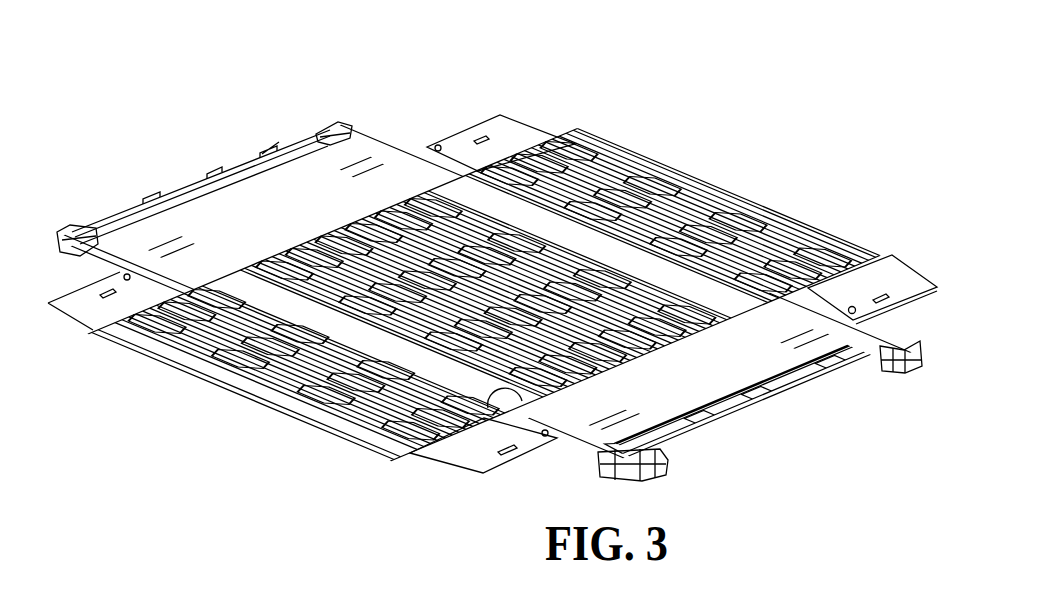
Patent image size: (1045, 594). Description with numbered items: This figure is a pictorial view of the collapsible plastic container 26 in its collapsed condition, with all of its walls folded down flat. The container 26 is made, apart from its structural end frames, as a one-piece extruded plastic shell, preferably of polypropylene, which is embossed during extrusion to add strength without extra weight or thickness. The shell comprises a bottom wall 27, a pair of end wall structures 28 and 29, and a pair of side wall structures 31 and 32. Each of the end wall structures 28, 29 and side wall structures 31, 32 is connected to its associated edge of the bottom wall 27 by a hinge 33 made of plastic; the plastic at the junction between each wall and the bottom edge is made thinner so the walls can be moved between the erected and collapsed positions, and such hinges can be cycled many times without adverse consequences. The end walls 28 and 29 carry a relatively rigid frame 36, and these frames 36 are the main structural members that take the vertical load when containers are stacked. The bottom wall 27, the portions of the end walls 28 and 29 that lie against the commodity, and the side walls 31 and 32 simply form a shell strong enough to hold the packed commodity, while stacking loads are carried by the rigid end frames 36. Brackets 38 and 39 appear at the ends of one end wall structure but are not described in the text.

The container 26 is at (638, 134).
The bottom wall 27 is at (451, 372).
The end wall structure 28 is at (282, 234).
The end wall structure 29 is at (736, 383).
The side wall structure 31 is at (690, 182).
The side wall structure 32 is at (250, 385).
The hinge 33 is at (538, 393).
The frame 36 is at (751, 421).
The first bracket 38 is at (653, 472).
The second bracket 39 is at (908, 372).